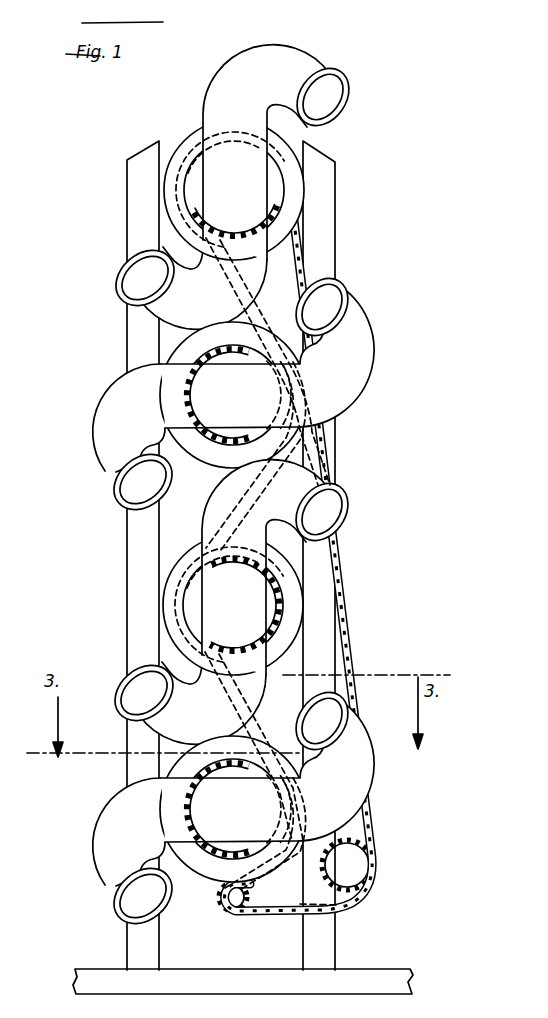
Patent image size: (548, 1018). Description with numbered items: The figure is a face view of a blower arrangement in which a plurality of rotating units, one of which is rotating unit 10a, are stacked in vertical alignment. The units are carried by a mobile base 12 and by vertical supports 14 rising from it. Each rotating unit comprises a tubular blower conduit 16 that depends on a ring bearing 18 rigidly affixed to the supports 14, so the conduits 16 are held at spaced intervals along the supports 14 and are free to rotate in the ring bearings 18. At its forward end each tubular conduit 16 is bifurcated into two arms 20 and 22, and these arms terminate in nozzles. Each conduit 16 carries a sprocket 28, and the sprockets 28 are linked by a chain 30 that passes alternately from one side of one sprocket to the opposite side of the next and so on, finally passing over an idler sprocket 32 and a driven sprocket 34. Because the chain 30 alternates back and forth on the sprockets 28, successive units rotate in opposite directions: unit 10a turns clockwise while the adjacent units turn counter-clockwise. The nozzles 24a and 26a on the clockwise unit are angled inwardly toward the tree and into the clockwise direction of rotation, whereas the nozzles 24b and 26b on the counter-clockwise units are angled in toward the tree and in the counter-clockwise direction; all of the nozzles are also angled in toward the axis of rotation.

The rotating unit 10a is at (252, 443).
The mobile base 12 is at (225, 962).
The vertical supports 14 is at (142, 212).
The tubular blower conduit 16 is at (278, 192).
The ring bearing 18 is at (170, 165).
The arm 20 is at (214, 106).
The arm 22 is at (250, 272).
The nozzle 24a is at (343, 93).
The nozzle 24b is at (343, 311).
The nozzle 26a is at (125, 676).
The nozzle 26b is at (122, 270).
The sprocket 28 is at (310, 227).
The chain 30 is at (338, 458).
The idler sprocket 32 is at (218, 896).
The driven sprocket 34 is at (368, 878).